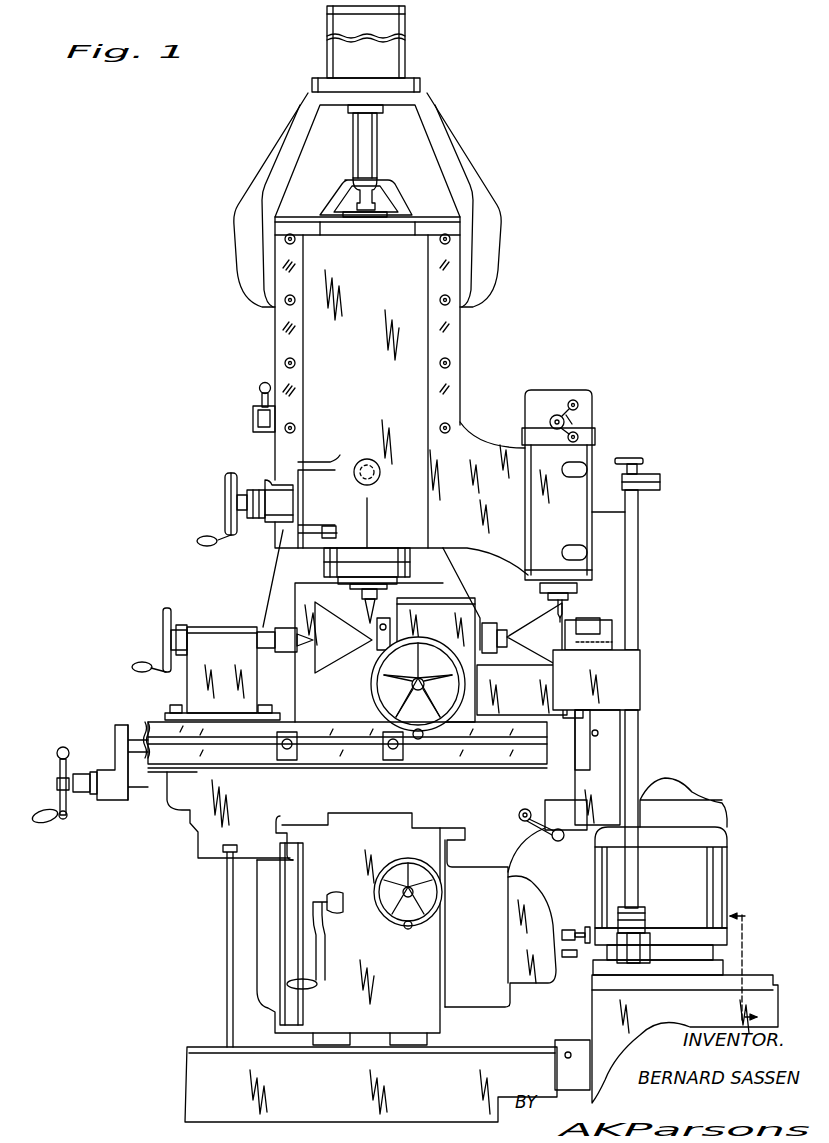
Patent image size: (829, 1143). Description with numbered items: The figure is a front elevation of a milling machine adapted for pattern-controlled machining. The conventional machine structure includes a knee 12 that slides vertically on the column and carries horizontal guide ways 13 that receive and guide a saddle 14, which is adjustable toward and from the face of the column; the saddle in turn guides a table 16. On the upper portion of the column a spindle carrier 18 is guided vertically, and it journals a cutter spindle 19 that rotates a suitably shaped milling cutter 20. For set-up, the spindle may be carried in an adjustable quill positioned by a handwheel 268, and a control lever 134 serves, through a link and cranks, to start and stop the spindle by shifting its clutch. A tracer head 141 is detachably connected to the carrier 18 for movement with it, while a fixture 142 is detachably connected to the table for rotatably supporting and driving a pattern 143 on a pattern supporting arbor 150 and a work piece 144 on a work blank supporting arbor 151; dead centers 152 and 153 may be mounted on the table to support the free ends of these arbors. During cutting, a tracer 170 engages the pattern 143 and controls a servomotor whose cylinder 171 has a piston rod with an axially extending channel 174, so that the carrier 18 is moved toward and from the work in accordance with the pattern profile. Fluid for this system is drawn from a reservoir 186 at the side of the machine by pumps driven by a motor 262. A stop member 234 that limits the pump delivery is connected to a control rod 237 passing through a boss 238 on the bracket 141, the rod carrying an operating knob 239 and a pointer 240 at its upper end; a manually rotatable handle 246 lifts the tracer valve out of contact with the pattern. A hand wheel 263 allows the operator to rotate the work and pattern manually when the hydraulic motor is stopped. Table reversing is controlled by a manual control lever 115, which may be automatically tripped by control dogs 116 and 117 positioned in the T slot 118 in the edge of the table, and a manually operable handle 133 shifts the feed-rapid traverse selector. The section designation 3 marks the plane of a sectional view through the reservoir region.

The cylinder 171 is at (388, 63).
The axially extending channel 174 is at (378, 133).
The spindle carrier 18 is at (315, 346).
The control lever 134 is at (259, 388).
The tracer head 141 is at (484, 442).
The manually rotatable handle 246 is at (572, 428).
The operating knob 239 is at (632, 459).
The pointer 240 is at (643, 480).
The boss 238 is at (632, 504).
The handwheel 268 is at (225, 483).
The cutter spindle 19 is at (330, 562).
The milling cutter 20 is at (310, 585).
The dead center 152 is at (212, 622).
The work blank supporting arbor 151 is at (278, 630).
The work piece 144 is at (278, 665).
The pattern supporting arbor 150 is at (498, 632).
The pattern 143 is at (562, 630).
The tracer 170 is at (612, 628).
The dead center 153 is at (600, 645).
The fixture 142 is at (632, 671).
The table 16 is at (130, 726).
The control dog 116 is at (288, 760).
The manual control lever 115 is at (328, 768).
The control dog 117 is at (397, 762).
The hand wheel 263 is at (443, 737).
The T slot 118 is at (170, 740).
The saddle 14 is at (207, 830).
The horizontal guide ways 13 is at (280, 816).
The manually operable handle 133 is at (537, 845).
The motor 262 is at (703, 870).
The control rod 237 is at (634, 890).
The stop member 234 is at (633, 920).
The knee 12 is at (307, 886).
The reservoir 186 is at (772, 997).
The section line 3- 3 is at (744, 965).